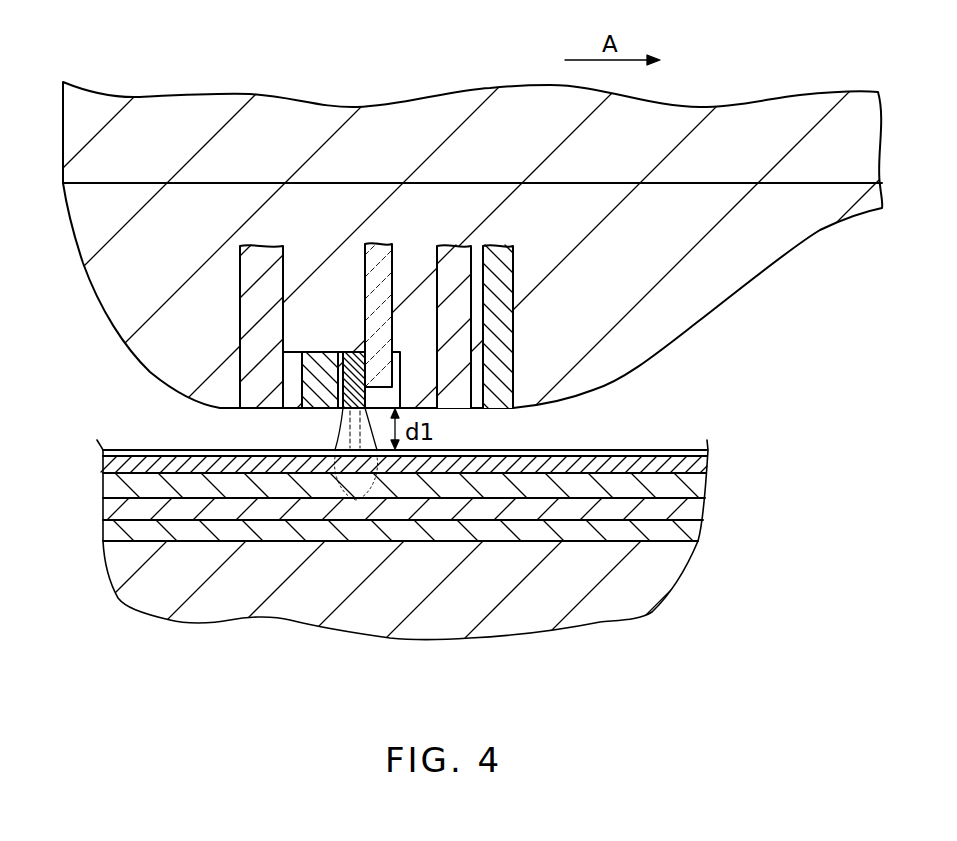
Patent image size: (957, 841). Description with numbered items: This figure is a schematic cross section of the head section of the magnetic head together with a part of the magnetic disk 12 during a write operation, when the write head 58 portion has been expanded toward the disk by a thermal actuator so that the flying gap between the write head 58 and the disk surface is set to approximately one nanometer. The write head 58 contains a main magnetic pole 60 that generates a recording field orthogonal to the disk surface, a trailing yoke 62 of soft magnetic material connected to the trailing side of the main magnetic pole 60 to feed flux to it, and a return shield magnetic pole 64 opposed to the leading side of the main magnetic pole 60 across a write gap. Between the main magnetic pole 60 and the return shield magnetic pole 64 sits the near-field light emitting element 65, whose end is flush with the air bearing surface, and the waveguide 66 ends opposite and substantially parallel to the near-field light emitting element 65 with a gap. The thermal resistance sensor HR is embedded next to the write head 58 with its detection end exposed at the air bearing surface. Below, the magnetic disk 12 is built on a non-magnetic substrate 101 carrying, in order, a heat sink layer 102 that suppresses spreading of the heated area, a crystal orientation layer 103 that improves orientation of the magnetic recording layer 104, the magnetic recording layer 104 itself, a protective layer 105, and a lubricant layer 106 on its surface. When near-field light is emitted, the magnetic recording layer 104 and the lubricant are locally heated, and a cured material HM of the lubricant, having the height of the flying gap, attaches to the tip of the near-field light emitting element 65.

The magnetic disk 12 is at (429, 566).
The write head 58 is at (226, 292).
The main magnetic pole 60 is at (322, 360).
The trailing yoke 62 is at (265, 393).
The return shield magnetic pole 64 is at (458, 247).
The near-field light emitting element 65 is at (352, 356).
The waveguide 66 is at (380, 247).
The substrate 101 is at (662, 580).
The heat sink layer 102 is at (693, 530).
The crystal orientation layer 103 is at (697, 508).
The magnetic recording layer 104 is at (700, 485).
The protective layer 105 is at (710, 460).
The lubricant layer 106 is at (706, 452).
The thermal resistance sensor HR is at (507, 338).
The cured material of the lubricant HM is at (333, 441).